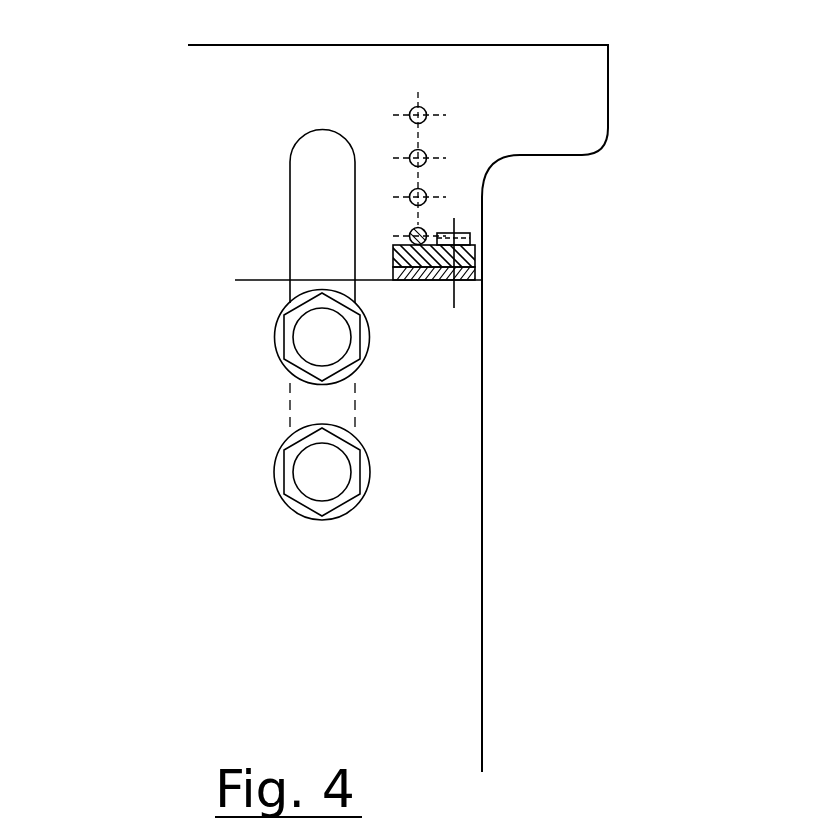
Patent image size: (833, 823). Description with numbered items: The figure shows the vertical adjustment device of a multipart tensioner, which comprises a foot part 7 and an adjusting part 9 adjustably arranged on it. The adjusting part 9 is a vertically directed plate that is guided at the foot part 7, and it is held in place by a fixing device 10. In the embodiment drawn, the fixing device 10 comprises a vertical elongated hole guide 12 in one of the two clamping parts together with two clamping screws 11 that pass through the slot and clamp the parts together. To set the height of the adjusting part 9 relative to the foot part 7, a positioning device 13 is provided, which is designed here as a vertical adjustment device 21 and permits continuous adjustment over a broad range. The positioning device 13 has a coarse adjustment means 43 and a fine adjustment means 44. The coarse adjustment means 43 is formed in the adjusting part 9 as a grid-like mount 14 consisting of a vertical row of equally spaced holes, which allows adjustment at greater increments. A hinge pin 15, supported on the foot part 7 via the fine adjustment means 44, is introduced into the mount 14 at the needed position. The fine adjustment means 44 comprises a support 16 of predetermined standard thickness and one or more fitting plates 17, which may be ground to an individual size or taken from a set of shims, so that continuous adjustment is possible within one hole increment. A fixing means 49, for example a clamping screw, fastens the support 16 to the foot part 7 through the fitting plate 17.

The foot part 7 is at (435, 598).
The adjusting part 9 is at (590, 67).
The fixing device 10 is at (240, 371).
The clamping screws 11 is at (327, 517).
The elongated hole guide 12 is at (317, 230).
The positioning device 13 is at (527, 176).
The vertical adjustment device 21 is at (495, 140).
The grid-like mount 14 is at (380, 148).
The coarse adjustment means 43 is at (410, 110).
The hinge pin 15 is at (425, 228).
The support 16 is at (543, 276).
The fine adjustment means 44 is at (478, 257).
The fitting plate 17 is at (423, 280).
The fixing means 49 is at (472, 237).